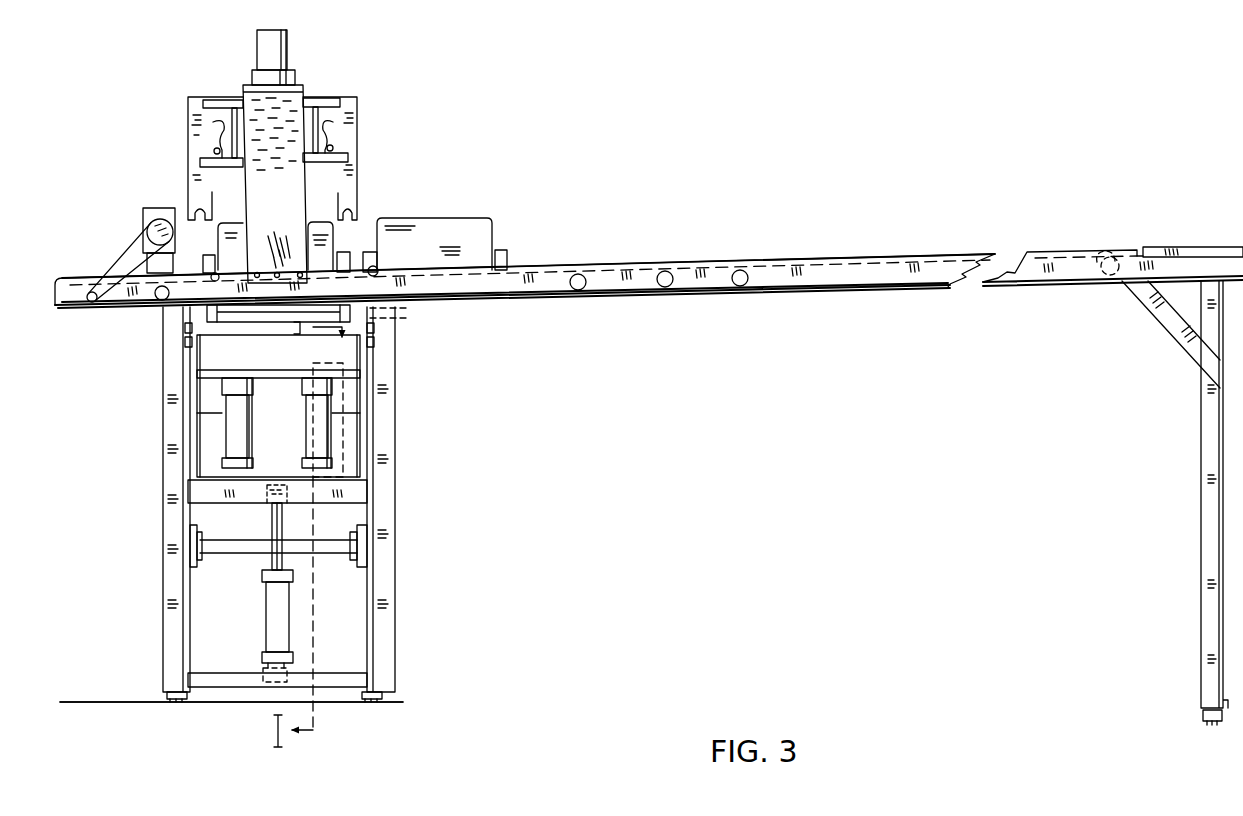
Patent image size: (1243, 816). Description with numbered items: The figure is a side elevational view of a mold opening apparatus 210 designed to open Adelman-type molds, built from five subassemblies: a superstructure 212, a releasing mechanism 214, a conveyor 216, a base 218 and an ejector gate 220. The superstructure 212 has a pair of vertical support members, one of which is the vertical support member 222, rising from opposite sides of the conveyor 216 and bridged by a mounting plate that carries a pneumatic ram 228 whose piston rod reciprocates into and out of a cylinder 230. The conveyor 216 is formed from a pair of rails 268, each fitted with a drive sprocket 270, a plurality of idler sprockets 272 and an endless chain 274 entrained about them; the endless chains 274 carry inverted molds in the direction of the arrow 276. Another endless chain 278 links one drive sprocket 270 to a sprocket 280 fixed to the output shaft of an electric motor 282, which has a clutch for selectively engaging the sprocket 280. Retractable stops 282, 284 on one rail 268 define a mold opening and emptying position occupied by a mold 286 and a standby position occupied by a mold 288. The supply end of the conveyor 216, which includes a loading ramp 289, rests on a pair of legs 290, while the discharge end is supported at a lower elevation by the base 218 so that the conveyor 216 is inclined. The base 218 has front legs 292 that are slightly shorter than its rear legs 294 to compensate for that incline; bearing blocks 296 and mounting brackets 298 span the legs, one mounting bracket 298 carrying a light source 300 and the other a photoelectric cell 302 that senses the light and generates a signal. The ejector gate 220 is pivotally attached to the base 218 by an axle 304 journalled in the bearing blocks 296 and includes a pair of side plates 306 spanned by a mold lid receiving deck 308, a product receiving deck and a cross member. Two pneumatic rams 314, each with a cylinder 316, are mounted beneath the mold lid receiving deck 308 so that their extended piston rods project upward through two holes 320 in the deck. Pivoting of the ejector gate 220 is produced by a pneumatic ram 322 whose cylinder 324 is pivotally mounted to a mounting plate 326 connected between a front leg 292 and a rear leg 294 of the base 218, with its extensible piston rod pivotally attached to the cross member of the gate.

The apparatus 210 is at (389, 73).
The superstructure 212 is at (308, 74).
The releasing mechanism 214 is at (371, 163).
The conveyor 216 is at (621, 252).
The base 218 is at (404, 580).
The ejector gate 220 is at (252, 563).
The vertical support member 222 is at (292, 202).
The pneumatic ram 228 is at (291, 49).
The cylinder 230 is at (257, 52).
The rail 268 is at (807, 256).
The drive sprocket 270 is at (91, 290).
The idler sprocket 272 is at (574, 292).
The endless chain 274 is at (1098, 251).
The arrow 276 is at (500, 165).
The endless chain 278 is at (118, 303).
The sprocket 280 is at (153, 226).
The retractable stop 282 is at (160, 207).
The retractable stop 284 is at (376, 269).
The mold 286 is at (333, 234).
The mold 288 is at (463, 220).
The loading ramp 289 is at (1190, 250).
The leg 290 is at (1210, 402).
The front leg 292 is at (175, 580).
The rear leg 294 is at (384, 457).
The bearing block 296 is at (190, 532).
The mounting bracket 298 is at (187, 347).
The light source 300 is at (185, 328).
The photoelectric cell 302 is at (373, 327).
The axle 304 is at (298, 549).
The side plate 306 is at (358, 437).
The mold lid receiving deck 308 is at (209, 371).
The pneumatic ram 314 is at (308, 438).
The cylinder 316 is at (312, 403).
The hole 320 is at (279, 371).
The pneumatic ram 322 is at (255, 662).
The cylinder 324 is at (272, 626).
The mounting plate 326 is at (272, 524).